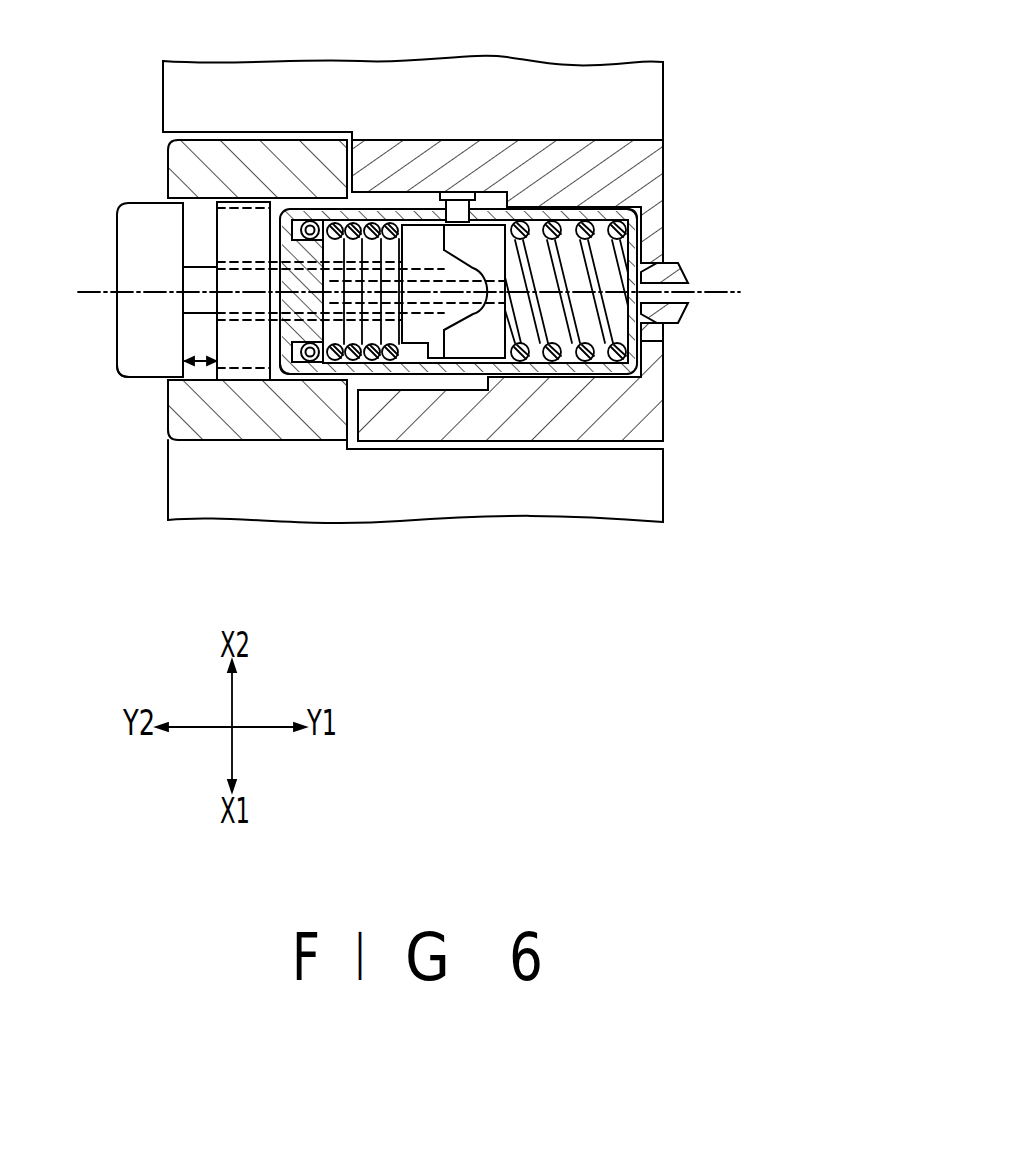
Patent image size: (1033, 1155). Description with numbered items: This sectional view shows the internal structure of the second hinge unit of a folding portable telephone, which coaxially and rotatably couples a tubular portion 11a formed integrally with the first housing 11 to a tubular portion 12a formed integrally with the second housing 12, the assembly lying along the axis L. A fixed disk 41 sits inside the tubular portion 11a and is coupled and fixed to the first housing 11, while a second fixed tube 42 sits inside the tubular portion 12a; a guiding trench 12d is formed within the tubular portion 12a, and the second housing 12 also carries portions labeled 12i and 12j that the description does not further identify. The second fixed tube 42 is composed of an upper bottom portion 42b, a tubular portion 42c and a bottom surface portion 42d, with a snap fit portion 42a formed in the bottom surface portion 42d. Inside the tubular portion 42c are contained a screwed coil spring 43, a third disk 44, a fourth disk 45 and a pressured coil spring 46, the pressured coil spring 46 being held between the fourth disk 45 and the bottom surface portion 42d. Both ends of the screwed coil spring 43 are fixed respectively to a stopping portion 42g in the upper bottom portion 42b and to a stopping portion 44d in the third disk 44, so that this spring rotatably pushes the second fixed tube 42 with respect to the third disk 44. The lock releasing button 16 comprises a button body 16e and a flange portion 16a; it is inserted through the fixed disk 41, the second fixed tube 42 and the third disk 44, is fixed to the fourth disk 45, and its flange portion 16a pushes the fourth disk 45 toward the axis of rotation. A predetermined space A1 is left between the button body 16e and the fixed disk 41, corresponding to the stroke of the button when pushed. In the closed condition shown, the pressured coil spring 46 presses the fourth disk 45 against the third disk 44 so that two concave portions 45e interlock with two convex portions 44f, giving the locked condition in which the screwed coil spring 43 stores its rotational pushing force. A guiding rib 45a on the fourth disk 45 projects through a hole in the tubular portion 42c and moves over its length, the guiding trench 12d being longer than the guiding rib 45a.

The first housing 11 is at (190, 490).
The tubular portion 11a is at (173, 153).
The second housing 12 is at (645, 88).
The tubular portion 12a is at (597, 185).
The guiding trench 12d is at (490, 192).
The engaging portion 12i is at (662, 338).
The wall portion 12j is at (660, 365).
The lock releasing button 16 is at (130, 317).
The flange portion 16a is at (350, 268).
The button body 16e is at (130, 363).
The fixed disk 41 is at (227, 228).
The second fixed tube 42 is at (390, 372).
The snap fit portion 42a is at (680, 272).
The upper bottom portion 42b is at (290, 378).
The tubular portion 42c is at (625, 207).
The bottom surface portion 42d is at (637, 257).
The stopping portion 42g is at (311, 236).
The screwed coil spring 43 is at (315, 236).
The third disk 44 is at (425, 328).
The stopping portion 44d is at (474, 320).
The convex portions 44f is at (478, 318).
The fourth disk 45 is at (507, 193).
The guiding rib 45a is at (490, 192).
The concave portions 45e is at (572, 378).
The pressured coil spring 46 is at (634, 240).
The axis L is at (80, 292).
The predetermined distance (space) A1 is at (200, 346).